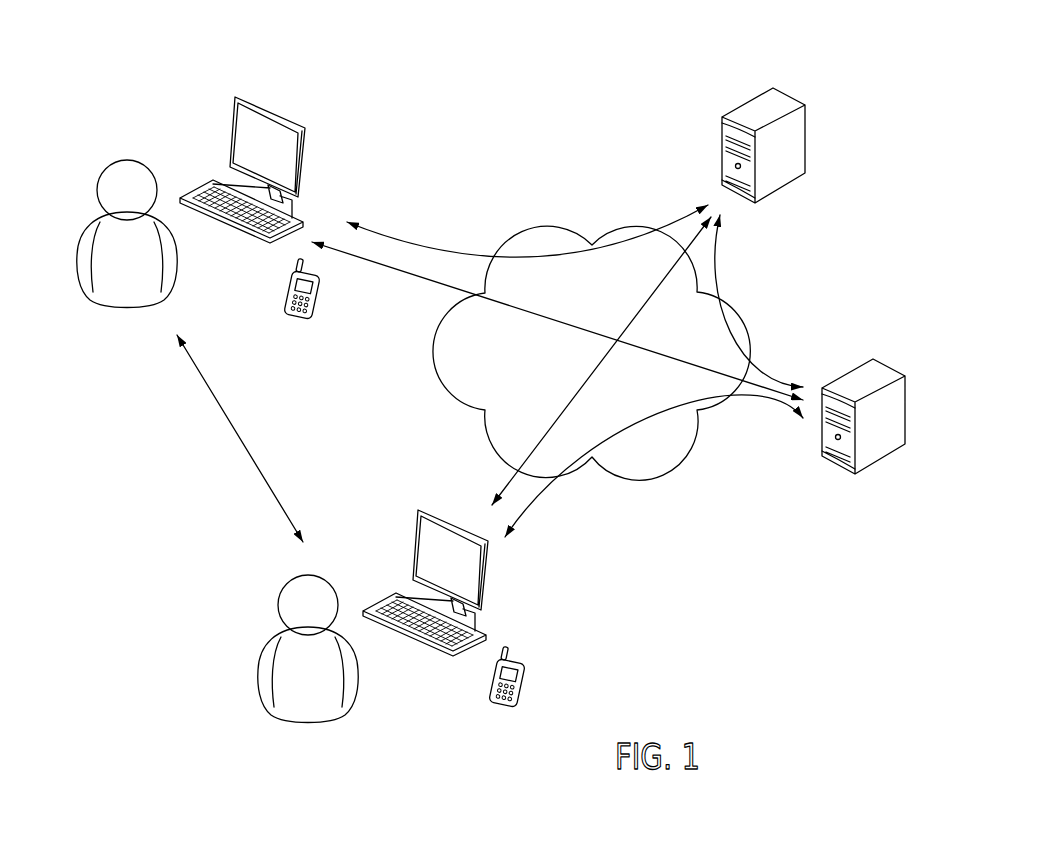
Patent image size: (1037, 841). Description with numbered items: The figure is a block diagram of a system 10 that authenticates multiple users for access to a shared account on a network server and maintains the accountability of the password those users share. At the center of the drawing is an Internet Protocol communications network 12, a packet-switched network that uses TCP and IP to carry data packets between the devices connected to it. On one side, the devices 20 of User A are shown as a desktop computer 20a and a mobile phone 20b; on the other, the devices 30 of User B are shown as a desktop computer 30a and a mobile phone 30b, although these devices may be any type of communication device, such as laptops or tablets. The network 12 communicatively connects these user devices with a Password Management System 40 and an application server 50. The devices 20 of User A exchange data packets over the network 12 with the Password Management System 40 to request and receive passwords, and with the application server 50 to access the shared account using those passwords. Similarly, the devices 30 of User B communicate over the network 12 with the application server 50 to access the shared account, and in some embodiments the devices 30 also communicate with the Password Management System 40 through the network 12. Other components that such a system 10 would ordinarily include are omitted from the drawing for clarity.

The system 10 is at (962, 88).
The IP communications network 12 is at (641, 397).
The devices of User A 20 is at (173, 122).
The desktop computer 20a is at (279, 115).
The mobile phone 20b is at (288, 287).
The devices of User B 30 is at (237, 692).
The desktop computer 30a is at (412, 548).
The mobile phone 30b is at (522, 670).
The Password Management System 40 is at (706, 100).
The application server 50 is at (905, 358).